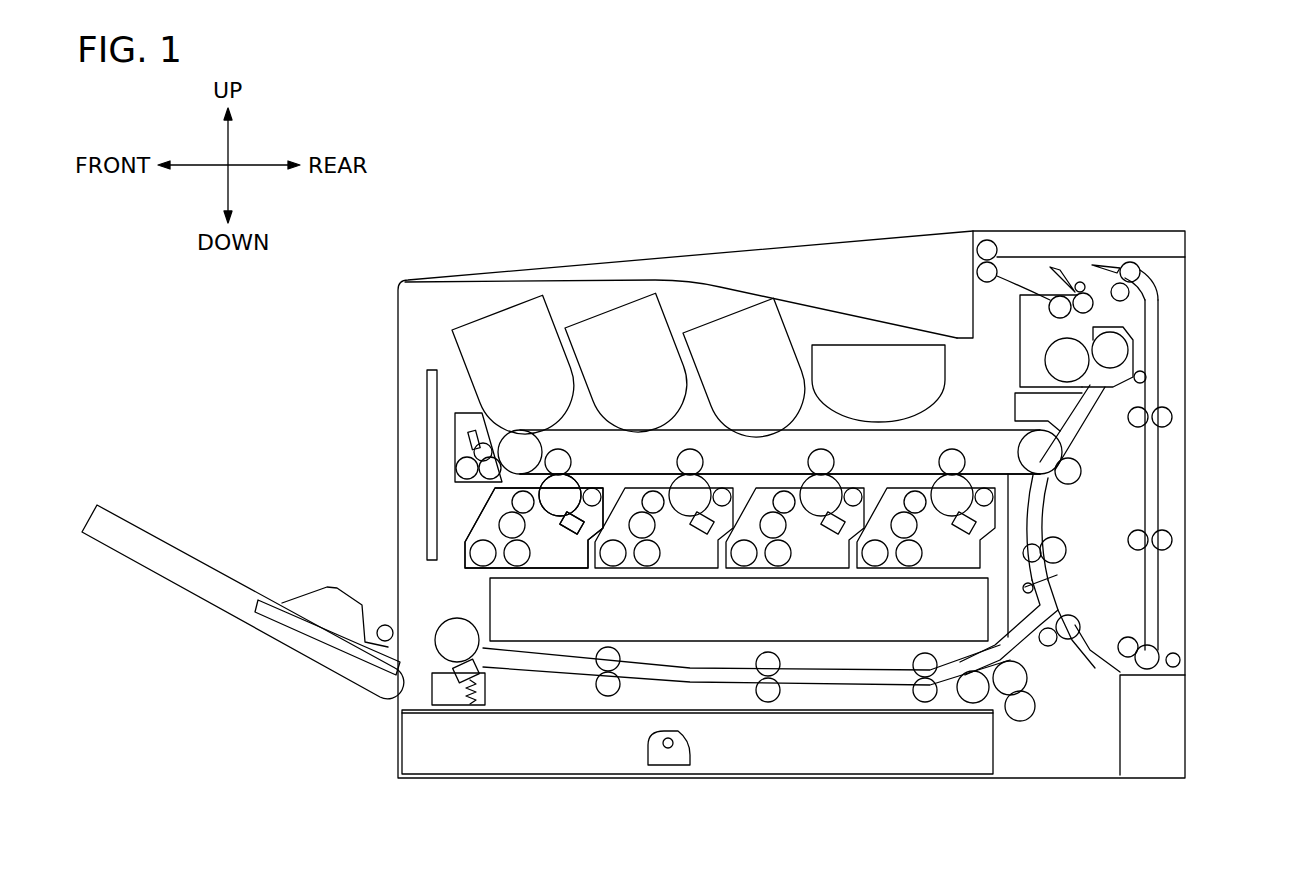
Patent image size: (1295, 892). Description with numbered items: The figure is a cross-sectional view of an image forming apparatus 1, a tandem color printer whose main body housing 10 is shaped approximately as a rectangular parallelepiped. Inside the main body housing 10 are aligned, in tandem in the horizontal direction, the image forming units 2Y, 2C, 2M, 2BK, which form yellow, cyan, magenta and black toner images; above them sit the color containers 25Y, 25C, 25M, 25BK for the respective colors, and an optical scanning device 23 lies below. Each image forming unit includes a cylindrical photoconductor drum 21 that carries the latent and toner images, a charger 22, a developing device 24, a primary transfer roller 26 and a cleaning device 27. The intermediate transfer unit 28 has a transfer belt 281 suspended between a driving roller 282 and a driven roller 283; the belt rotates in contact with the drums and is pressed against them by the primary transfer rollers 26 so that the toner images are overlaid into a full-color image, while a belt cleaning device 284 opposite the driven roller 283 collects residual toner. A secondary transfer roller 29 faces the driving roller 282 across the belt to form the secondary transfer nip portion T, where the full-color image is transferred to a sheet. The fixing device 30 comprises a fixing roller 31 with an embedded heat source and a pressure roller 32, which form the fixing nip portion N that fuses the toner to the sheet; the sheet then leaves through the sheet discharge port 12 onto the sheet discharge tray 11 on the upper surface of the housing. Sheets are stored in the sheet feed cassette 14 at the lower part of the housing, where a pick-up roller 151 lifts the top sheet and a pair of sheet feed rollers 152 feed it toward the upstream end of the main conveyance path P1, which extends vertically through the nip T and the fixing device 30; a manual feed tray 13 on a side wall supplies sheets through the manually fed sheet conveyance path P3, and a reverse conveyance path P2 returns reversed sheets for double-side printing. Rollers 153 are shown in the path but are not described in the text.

The image forming apparatus 1 is at (1132, 180).
The main body housing 10 is at (398, 322).
The sheet discharge tray 11 is at (808, 303).
The sheet discharge port 12 is at (968, 255).
The manual feed tray 13 is at (148, 530).
The sheet feed cassette 14 is at (422, 735).
The photoconductor drum 21 is at (558, 512).
The charger 22 is at (571, 517).
The optical scanning device 23 is at (503, 600).
The developing device 24 is at (483, 518).
The black color container 25BK is at (502, 327).
The cyan color container 25C is at (617, 328).
The magenta color container 25M is at (730, 330).
The yellow color container 25Y is at (880, 358).
The primary transfer roller 26 is at (572, 459).
The cleaning device 27 is at (607, 508).
The intermediate transfer unit 28 is at (975, 416).
The transfer belt 281 is at (745, 540).
The driving roller 282 is at (1063, 445).
The driven roller 283 is at (518, 450).
The belt cleaning device 284 is at (460, 455).
The secondary transfer roller 29 is at (1080, 475).
The black image forming unit 2BK is at (551, 536).
The cyan image forming unit 2C is at (682, 536).
The magenta image forming unit 2M is at (812, 536).
The yellow image forming unit 2Y is at (942, 536).
The fixing device 30 is at (1140, 320).
The fixing roller 31 is at (1080, 365).
The pressure roller 32 is at (1120, 350).
The pick-up roller 151 is at (973, 703).
The pair of sheet feed rollers 152 is at (1020, 722).
The registration rollers 153 is at (1058, 553).
The fixing nip portion N is at (1136, 327).
The secondary transfer nip portion T is at (1080, 452).
The main conveyance path P1 is at (1033, 518).
The reverse conveyance path P2 is at (1150, 483).
The manually fed sheet conveyance path P3 is at (652, 670).